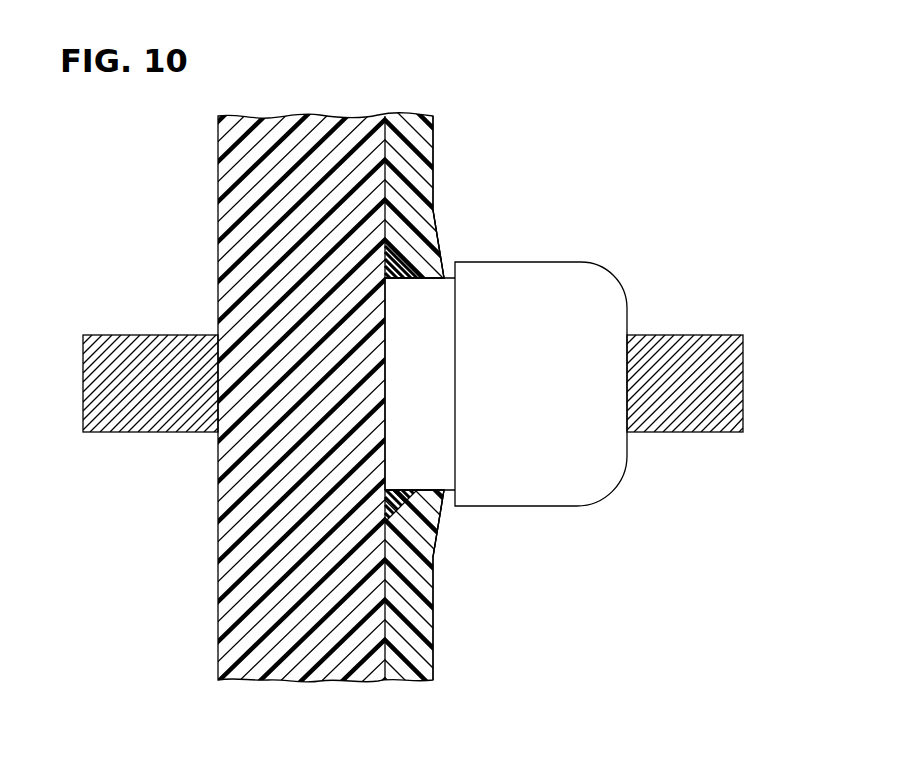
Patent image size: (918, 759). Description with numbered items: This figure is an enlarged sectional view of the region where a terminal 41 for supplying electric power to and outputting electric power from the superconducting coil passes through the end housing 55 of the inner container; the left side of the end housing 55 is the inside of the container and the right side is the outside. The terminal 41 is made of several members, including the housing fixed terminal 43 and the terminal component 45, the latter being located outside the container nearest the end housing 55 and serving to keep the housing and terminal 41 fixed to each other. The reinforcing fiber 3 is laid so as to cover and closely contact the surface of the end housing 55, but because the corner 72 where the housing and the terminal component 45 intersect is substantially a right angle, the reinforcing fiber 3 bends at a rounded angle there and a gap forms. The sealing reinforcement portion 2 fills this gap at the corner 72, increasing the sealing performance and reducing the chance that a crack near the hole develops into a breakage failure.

The sealing reinforcement portion 2 is at (393, 267).
The reinforcing fiber 3 is at (414, 181).
The terminal 41 is at (413, 395).
The housing fixed terminal 43 is at (151, 407).
The terminal component 45 is at (546, 487).
The end housing 55 is at (282, 652).
The corner 72 is at (419, 278).